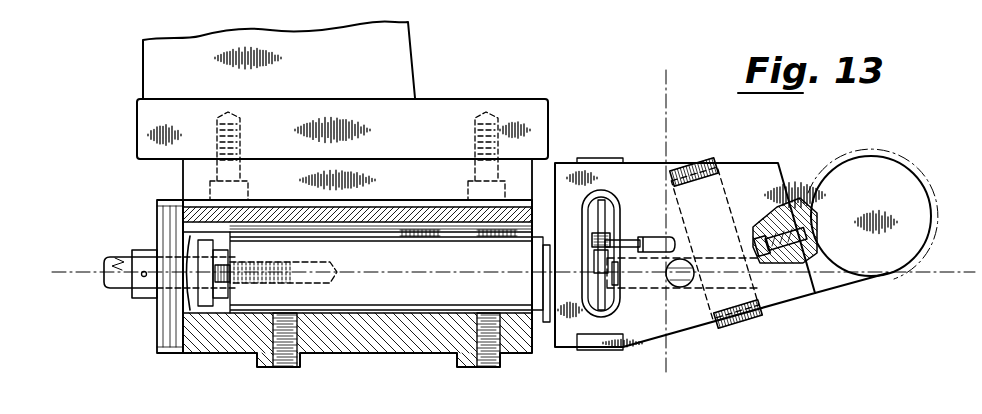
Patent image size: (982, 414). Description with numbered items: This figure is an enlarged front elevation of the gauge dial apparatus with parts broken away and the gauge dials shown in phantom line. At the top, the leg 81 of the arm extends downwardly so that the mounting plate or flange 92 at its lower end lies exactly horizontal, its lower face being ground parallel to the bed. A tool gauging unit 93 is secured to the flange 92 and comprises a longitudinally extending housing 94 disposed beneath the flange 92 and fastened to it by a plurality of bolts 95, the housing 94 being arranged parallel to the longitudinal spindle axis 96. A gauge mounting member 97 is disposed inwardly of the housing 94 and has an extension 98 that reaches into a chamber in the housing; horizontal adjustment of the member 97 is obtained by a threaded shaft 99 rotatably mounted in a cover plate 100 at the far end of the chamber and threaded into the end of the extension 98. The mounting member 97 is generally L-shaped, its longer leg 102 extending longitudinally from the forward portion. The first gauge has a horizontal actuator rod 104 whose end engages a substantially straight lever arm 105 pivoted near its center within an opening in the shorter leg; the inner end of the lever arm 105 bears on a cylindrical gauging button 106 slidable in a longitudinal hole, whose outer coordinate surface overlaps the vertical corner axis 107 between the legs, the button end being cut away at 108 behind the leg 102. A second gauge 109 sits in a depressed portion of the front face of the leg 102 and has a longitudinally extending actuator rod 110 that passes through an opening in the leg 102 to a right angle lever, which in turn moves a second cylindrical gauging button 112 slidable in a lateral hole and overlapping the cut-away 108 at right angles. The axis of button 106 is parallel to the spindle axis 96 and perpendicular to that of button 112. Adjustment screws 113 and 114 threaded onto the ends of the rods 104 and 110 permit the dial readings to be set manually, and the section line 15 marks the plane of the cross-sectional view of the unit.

The section line 15- 15 is at (538, 283).
The leg 81 is at (412, 64).
The mounting plate or flange 92 is at (488, 100).
The tool gauging unit 93 is at (751, 334).
The housing 94 is at (334, 354).
The bolts 95 is at (240, 166).
The longitudinal spindle axis 96 is at (935, 270).
The gauge mounting member 97 is at (757, 170).
The extension 98 is at (407, 314).
The threaded shaft 99 is at (105, 275).
The cover plate 100 is at (158, 333).
The longer leg 102 is at (893, 178).
The actuator rod 104 is at (656, 236).
The lever arm 105 is at (596, 254).
The cylindrical gauging button 106 is at (613, 280).
The vertical corner axis 107 is at (668, 103).
The cut-away portion 108 is at (666, 285).
The second gauge 109 is at (868, 276).
The actuator rod 110 is at (800, 232).
The cylindrical gauging button 112 is at (681, 288).
The adjustment screw 113 is at (622, 242).
The adjustment screw 114 is at (764, 262).